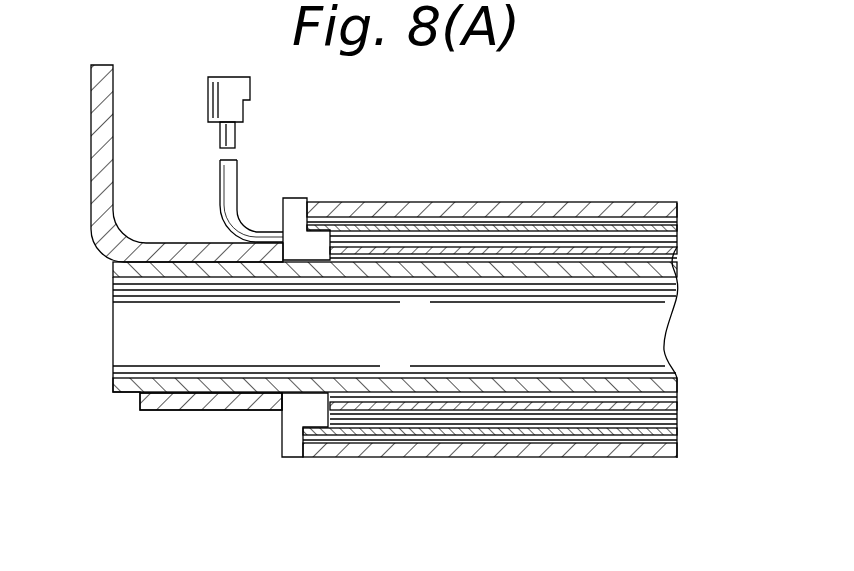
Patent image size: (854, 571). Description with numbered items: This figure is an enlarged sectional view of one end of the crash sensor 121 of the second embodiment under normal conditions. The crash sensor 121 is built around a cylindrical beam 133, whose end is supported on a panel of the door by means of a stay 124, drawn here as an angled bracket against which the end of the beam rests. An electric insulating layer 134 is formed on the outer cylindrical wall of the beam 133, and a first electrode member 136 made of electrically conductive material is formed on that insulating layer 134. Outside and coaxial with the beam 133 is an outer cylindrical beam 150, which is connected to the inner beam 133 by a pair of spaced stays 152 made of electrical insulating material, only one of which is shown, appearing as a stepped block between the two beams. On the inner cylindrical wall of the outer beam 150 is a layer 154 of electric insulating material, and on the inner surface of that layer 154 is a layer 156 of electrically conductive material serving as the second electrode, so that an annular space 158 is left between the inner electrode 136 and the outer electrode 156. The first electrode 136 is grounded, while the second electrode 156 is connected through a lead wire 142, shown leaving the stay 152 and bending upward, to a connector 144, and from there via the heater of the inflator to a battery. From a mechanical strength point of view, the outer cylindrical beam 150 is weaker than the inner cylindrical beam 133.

The crash sensor 121 is at (539, 484).
The stay 124 is at (113, 97).
The cylindrical beam 133 is at (678, 266).
The electric insulating layer 134 is at (630, 258).
The first electrode member 136 is at (535, 255).
The lead wire 142 is at (227, 195).
The connector 144 is at (240, 92).
The outer cylindrical beam 150 is at (653, 203).
The stay 152 is at (296, 212).
The layer of electric insulating material 154 is at (465, 218).
The layer of electrically conductive material 156 is at (370, 228).
The annular space 158 is at (562, 240).